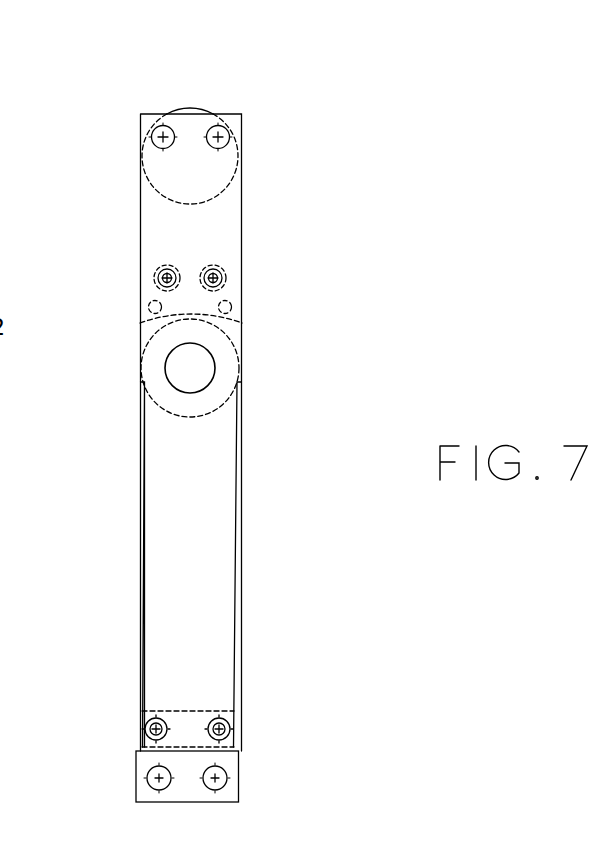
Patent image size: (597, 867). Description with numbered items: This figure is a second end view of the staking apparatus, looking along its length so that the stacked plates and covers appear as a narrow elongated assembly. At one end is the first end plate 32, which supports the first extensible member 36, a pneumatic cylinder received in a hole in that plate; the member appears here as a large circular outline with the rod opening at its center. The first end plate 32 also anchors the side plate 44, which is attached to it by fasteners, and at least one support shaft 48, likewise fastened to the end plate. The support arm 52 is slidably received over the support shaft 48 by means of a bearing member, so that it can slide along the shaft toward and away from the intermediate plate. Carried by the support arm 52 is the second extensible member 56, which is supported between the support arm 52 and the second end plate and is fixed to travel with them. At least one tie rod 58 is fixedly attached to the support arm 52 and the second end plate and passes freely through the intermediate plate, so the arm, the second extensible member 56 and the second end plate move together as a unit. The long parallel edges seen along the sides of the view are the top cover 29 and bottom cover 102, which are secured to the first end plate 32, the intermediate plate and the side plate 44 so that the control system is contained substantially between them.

The cover 29 is at (138, 630).
The first end plate 32 is at (237, 775).
The first extensible member 36 is at (220, 407).
The side plate 44 is at (192, 710).
The support shaft 48 is at (157, 265).
The support arm 52 is at (218, 320).
The second extensible member 56 is at (207, 111).
The tie rod 58 is at (149, 303).
The bottom cover 102 is at (238, 632).